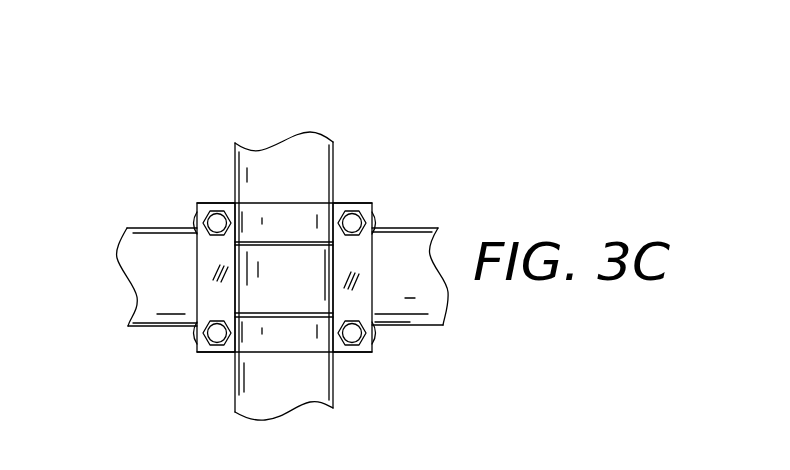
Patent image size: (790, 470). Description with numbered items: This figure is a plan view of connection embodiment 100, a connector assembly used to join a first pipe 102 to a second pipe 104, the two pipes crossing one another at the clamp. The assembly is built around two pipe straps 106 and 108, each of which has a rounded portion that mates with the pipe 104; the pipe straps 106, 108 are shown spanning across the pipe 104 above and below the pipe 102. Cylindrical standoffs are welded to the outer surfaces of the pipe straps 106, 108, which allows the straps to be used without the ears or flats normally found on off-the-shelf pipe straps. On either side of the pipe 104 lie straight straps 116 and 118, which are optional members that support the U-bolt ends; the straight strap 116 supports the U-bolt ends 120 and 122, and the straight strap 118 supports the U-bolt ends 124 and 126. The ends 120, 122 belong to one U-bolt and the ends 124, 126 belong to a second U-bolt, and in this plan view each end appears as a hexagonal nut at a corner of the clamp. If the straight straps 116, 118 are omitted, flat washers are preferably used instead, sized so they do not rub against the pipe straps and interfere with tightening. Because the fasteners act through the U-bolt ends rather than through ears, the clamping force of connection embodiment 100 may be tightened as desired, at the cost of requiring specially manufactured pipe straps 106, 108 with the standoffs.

The connection embodiment 100 is at (125, 152).
The pipe 102 is at (143, 255).
The pipe 104 is at (303, 153).
The pipe strap 106 is at (297, 343).
The pipe strap 108 is at (297, 213).
The straight strap 116 is at (352, 288).
The straight strap 118 is at (203, 287).
The U-bolt end 120 is at (208, 217).
The U-bolt end 122 is at (218, 346).
The U-bolt end 124 is at (356, 222).
The U-bolt end 126 is at (353, 332).